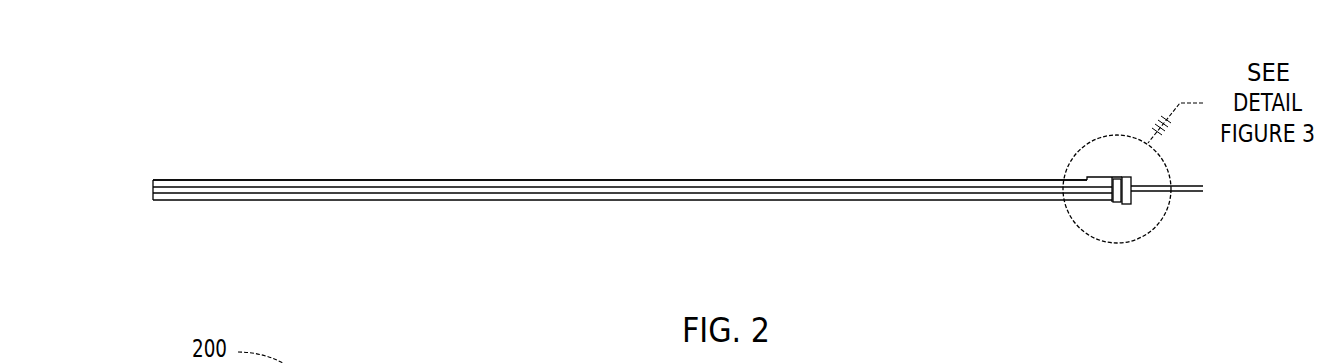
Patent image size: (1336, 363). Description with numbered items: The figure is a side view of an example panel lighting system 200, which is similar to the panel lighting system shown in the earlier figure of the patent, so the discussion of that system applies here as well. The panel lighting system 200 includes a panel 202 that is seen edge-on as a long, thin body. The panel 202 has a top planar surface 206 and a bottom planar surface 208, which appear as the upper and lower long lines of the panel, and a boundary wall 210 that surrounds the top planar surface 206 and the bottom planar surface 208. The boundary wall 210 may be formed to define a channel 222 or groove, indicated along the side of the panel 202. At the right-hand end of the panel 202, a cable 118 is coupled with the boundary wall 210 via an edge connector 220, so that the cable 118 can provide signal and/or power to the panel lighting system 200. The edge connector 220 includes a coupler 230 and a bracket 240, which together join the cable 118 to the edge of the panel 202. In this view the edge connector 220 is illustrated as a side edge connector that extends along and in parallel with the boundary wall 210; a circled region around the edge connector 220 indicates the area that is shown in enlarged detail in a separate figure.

The panel lighting system 200 is at (605, 134).
The panel 202 is at (263, 174).
The top planar surface 206 is at (763, 178).
The bottom planar surface 208 is at (668, 207).
The boundary wall 210 is at (153, 182).
The channel 222 is at (855, 187).
The edge connector 220 is at (1146, 195).
The coupler 230 is at (1123, 197).
The bracket 240 is at (1097, 175).
The cable 118 is at (1138, 219).